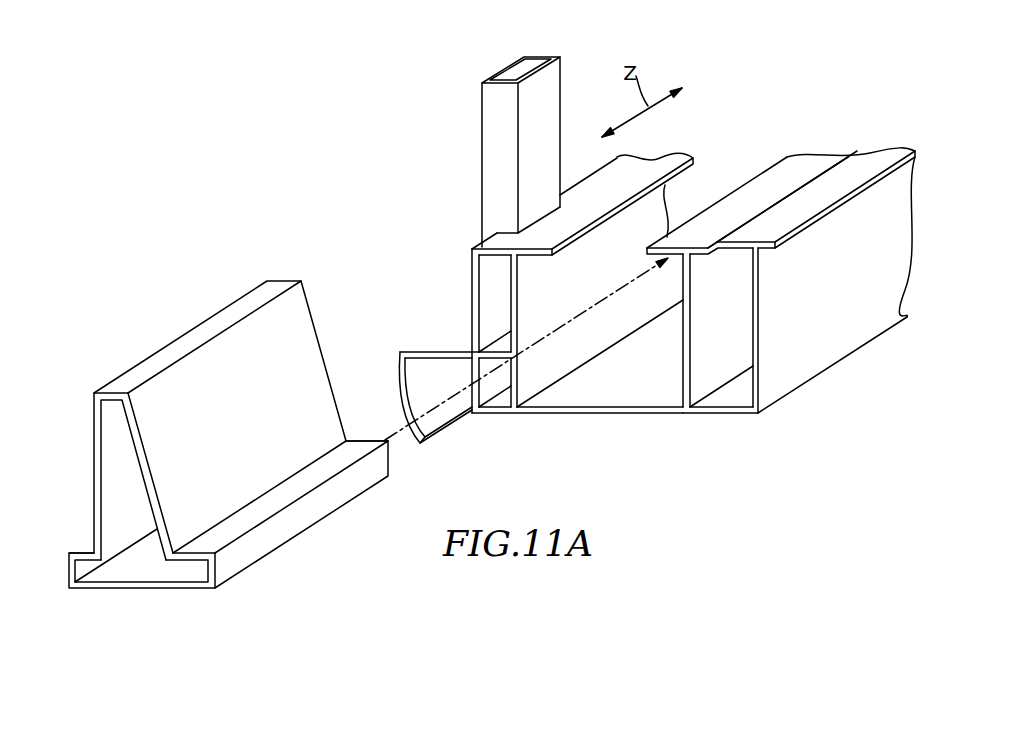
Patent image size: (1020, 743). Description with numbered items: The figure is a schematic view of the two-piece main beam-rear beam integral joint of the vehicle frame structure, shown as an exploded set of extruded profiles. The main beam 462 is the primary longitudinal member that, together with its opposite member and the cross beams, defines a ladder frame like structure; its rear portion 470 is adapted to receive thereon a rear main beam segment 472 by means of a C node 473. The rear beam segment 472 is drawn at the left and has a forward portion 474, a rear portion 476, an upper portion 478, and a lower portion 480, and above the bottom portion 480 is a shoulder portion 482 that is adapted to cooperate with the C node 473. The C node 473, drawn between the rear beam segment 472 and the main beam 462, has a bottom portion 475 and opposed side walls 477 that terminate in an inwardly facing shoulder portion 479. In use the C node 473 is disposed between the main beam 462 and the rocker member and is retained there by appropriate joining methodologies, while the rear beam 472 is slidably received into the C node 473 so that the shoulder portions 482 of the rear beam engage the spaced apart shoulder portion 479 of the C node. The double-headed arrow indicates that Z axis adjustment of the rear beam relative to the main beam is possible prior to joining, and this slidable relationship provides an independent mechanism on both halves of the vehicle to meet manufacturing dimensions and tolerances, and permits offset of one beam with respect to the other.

The main beam 462 is at (827, 338).
The rear portion of main beam 470 is at (720, 415).
The rear main beam segment 472 is at (313, 507).
The C node 473 is at (664, 460).
The forward portion 474 is at (307, 355).
The bottom portion 475 is at (598, 415).
The rear portion 476 is at (135, 563).
The opposed side walls 477 is at (522, 317).
The upper portion 478 is at (197, 333).
The shoulder portion 479 is at (670, 158).
The lower portion 480 is at (246, 568).
The shoulder portion 482 is at (88, 547).